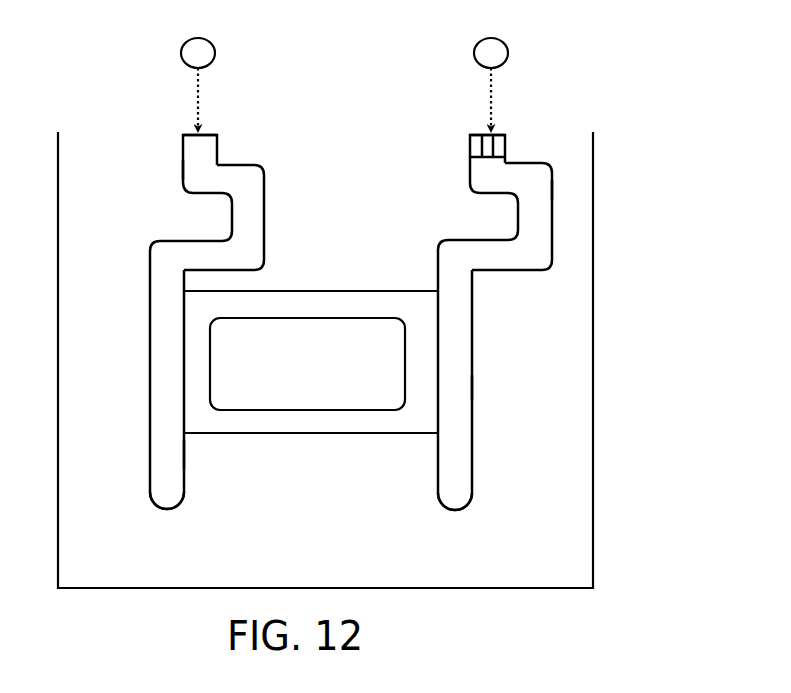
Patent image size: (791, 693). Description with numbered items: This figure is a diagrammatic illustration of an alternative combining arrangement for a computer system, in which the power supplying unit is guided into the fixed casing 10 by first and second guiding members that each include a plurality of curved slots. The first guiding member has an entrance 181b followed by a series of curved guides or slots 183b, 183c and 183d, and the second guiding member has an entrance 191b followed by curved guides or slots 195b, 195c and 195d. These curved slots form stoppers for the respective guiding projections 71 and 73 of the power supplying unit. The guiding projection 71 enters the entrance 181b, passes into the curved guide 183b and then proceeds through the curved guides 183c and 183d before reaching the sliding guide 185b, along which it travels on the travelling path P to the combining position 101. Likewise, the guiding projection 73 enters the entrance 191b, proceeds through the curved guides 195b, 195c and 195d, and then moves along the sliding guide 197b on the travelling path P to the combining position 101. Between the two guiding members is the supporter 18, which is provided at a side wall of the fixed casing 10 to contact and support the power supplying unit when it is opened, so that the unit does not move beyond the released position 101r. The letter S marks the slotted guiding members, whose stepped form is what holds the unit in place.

The fixed casing 10 is at (596, 396).
The supporter 18 is at (333, 438).
The guiding projection 71 is at (216, 54).
The guiding projection 73 is at (509, 52).
The combining position 101 is at (168, 512).
The released position 101r is at (238, 126).
The entrance 181b is at (213, 126).
The curved guide 183b is at (183, 154).
The curved guide 183c is at (266, 200).
The curved guide 183d is at (250, 272).
The sliding guide 185b is at (150, 408).
The entrance 191b is at (506, 130).
The curved guide 195b is at (470, 183).
The curved guide 195c is at (553, 212).
The curved guide 195d is at (510, 282).
The sliding guide 197b is at (473, 427).
The travelling path P is at (188, 459).
The S-shaped lead S is at (168, 186).